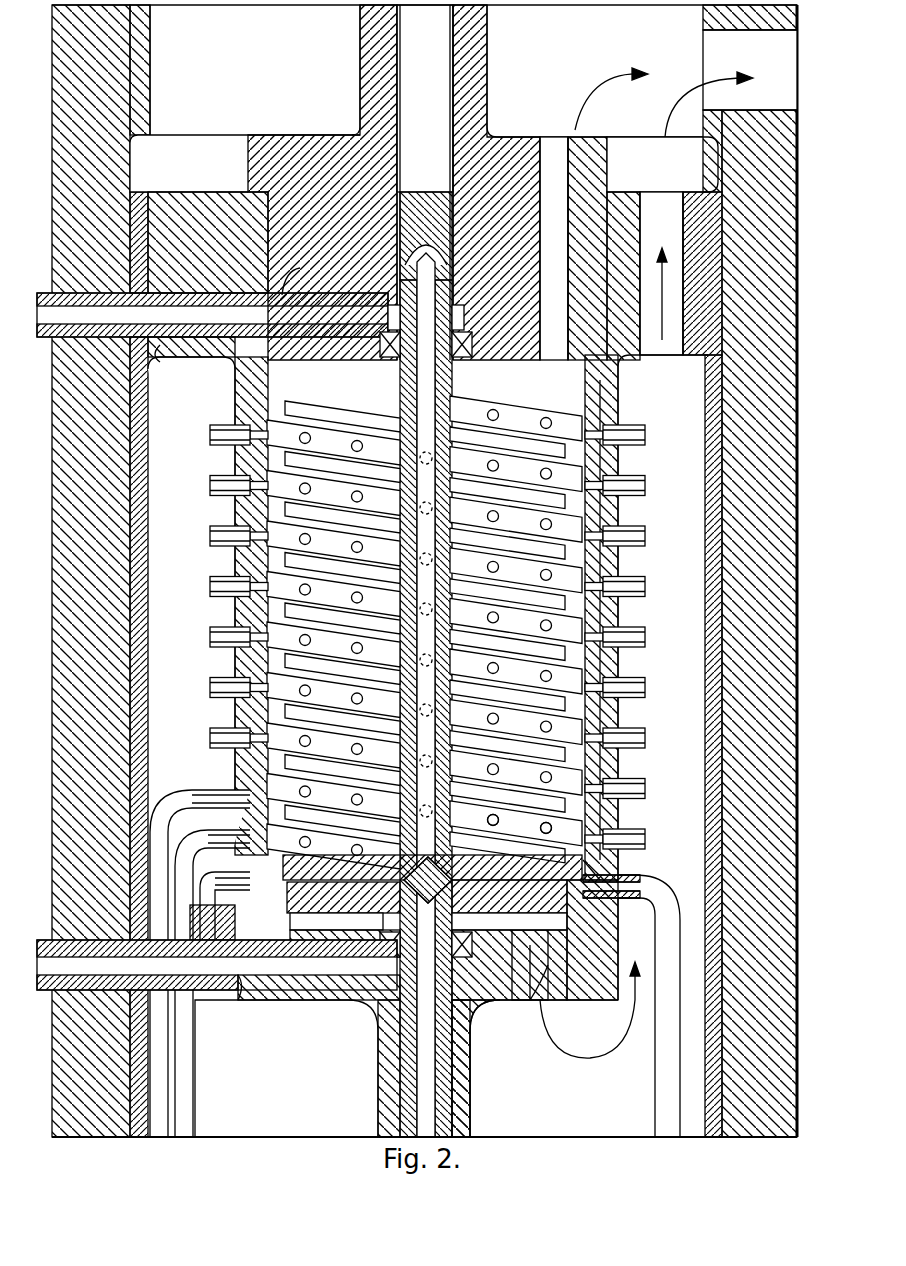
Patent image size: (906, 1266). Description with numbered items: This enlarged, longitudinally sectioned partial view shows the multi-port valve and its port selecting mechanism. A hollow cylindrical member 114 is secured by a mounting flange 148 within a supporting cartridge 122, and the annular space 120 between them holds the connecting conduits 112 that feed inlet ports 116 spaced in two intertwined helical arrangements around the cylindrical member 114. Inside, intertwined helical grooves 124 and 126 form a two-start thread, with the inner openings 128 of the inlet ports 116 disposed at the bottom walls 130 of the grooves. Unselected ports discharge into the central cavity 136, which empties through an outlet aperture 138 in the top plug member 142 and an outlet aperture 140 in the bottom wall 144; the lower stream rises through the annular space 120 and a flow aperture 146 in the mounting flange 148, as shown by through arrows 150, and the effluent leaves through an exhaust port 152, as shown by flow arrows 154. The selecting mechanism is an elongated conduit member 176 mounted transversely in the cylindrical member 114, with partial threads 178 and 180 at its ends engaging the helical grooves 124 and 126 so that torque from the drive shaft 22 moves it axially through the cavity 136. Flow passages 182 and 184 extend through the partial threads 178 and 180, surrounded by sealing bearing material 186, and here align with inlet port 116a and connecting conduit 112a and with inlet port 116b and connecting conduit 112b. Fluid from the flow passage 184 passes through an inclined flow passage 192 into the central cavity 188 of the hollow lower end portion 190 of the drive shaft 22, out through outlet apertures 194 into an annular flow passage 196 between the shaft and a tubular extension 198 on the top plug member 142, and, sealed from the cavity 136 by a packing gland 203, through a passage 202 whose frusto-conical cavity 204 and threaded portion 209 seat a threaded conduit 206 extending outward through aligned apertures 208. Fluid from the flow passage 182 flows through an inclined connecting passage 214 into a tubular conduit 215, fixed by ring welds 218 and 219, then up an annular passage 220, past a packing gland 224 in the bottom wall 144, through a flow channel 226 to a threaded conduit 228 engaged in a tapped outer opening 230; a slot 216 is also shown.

The drive shaft 22 is at (410, 70).
The connecting conduits 112 is at (220, 470).
The connecting conduit 112a is at (194, 1052).
The connecting conduit 112b is at (657, 999).
The cylindrical member 114 is at (612, 462).
The inlet ports 116 is at (522, 405).
The inlet port 116a is at (248, 872).
The inlet port 116b is at (618, 902).
The annular space 120 is at (698, 512).
The supporting cartridge 122 is at (712, 660).
The helical groove 124 is at (262, 668).
The helical groove 126 is at (240, 822).
The inner openings 128 is at (592, 522).
The bottom walls 130 is at (600, 618).
The central cavity 136 is at (262, 398).
The outlet aperture 138 is at (560, 146).
The outlet aperture 140 is at (540, 1000).
The top plug member 142 is at (290, 173).
The bottom wall 144 is at (470, 1010).
The flow aperture 146 is at (700, 365).
The mounting flange 148 is at (630, 192).
The through arrows 150 is at (672, 262).
The exhaust port 152 is at (718, 30).
The flow arrows 154 is at (664, 102).
The conduit member 176 is at (600, 815).
The partial thread 178 is at (240, 925).
The partial thread 180 is at (610, 858).
The flow passage 182 is at (338, 887).
The flow passage 184 is at (526, 890).
The bearing material 186 is at (590, 880).
The central cavity 188 is at (420, 394).
The hollow lower end portion 190 is at (400, 374).
The inclined flow passage 192 is at (510, 826).
The outlet apertures 194 is at (415, 255).
The annular flow passage 196 is at (455, 38).
The tubular extension 198 is at (480, 60).
The passage 202 is at (320, 305).
The packing gland 203 is at (470, 368).
The frusto-conical cavity 204 is at (283, 300).
The threaded conduit 206 is at (52, 292).
The aligned apertures 208 is at (150, 362).
The threaded portion 209 is at (306, 270).
The inclined connecting passage 214 is at (470, 862).
The tubular conduit 215 is at (440, 1116).
The slot 216 is at (392, 912).
The ring weld 218 is at (372, 932).
The ring weld 219 is at (476, 817).
The annular passage 220 is at (456, 1079).
The packing gland 224 is at (362, 1008).
The flow channel 226 is at (305, 997).
The threaded conduit 228 is at (52, 945).
The tapped outer opening 230 is at (250, 998).